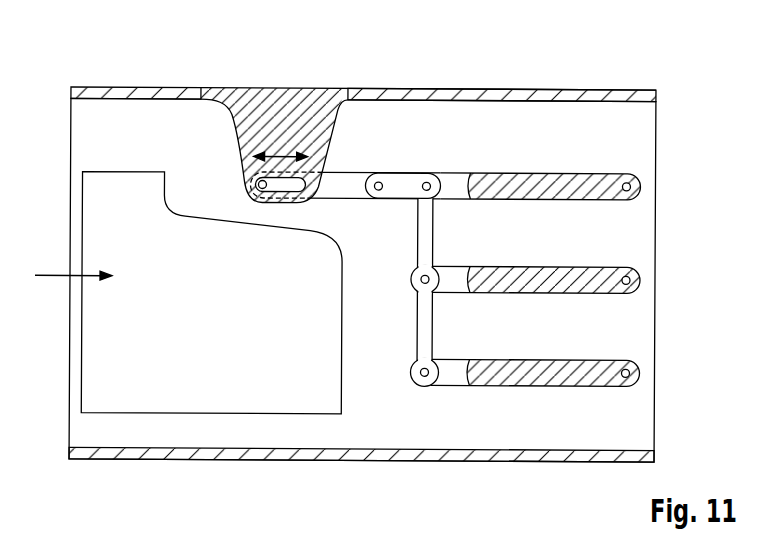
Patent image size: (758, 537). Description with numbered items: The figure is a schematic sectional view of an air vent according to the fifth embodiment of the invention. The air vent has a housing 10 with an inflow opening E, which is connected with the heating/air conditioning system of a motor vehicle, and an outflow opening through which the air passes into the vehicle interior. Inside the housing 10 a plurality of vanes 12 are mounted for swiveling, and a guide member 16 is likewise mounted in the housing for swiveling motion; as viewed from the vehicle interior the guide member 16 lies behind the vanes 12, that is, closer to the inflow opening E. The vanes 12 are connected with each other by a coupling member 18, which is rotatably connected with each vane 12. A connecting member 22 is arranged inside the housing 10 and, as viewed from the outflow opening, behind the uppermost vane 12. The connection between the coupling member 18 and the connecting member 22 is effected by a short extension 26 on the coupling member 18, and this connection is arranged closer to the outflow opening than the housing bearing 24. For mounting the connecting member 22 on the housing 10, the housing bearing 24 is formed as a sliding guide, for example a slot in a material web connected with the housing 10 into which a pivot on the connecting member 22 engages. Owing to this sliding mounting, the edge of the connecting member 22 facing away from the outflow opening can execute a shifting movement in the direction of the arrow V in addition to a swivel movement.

The housing 10 is at (155, 92).
The vane 12 is at (575, 181).
The guide member 16 is at (148, 185).
The coupling member 18 is at (425, 235).
The connecting member 22 is at (350, 178).
The housing bearing 24 is at (268, 110).
The extension 26 is at (401, 178).
The arrow V / shifting direction V is at (278, 152).
The inflow opening E is at (52, 275).